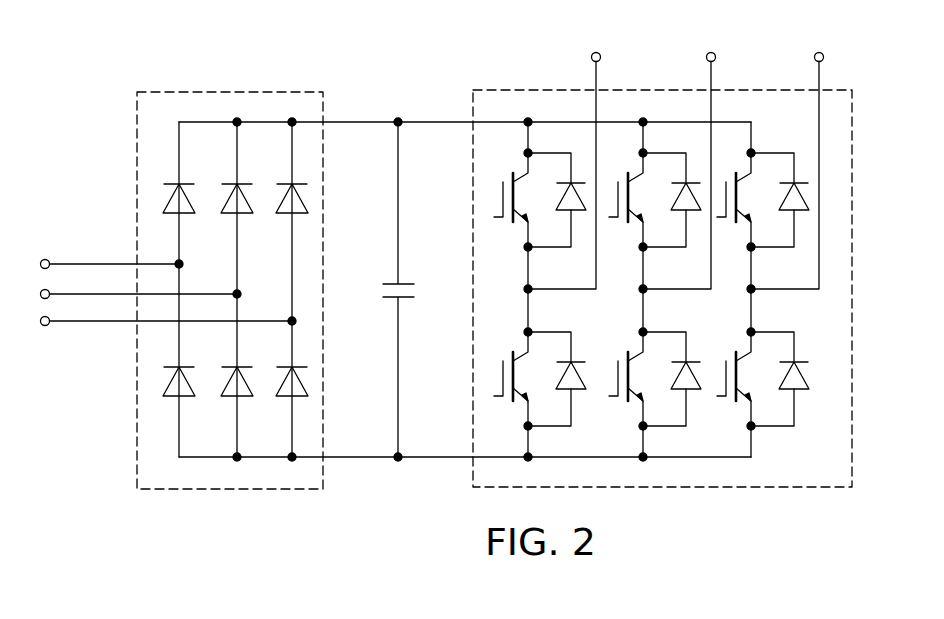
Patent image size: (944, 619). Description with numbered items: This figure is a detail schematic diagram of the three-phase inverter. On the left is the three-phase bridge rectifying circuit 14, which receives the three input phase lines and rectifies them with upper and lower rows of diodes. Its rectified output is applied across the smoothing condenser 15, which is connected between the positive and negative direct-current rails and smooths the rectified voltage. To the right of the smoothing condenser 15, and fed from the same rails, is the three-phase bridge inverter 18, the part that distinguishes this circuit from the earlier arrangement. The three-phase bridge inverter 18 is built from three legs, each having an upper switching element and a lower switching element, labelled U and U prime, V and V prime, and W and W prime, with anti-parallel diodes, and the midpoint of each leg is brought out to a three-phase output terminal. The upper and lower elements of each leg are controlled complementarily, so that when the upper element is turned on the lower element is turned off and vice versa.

The 3-phase bridge (rectifying circuit) 14 is at (258, 92).
The smoothing condenser 15 is at (398, 284).
The 3-phase bridge inverter 18 is at (765, 90).